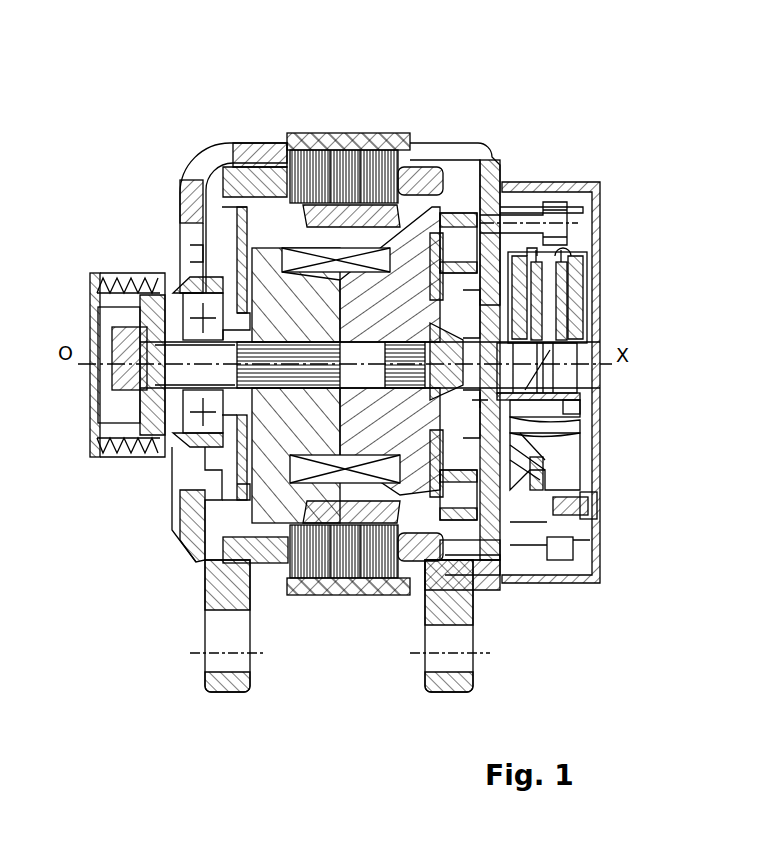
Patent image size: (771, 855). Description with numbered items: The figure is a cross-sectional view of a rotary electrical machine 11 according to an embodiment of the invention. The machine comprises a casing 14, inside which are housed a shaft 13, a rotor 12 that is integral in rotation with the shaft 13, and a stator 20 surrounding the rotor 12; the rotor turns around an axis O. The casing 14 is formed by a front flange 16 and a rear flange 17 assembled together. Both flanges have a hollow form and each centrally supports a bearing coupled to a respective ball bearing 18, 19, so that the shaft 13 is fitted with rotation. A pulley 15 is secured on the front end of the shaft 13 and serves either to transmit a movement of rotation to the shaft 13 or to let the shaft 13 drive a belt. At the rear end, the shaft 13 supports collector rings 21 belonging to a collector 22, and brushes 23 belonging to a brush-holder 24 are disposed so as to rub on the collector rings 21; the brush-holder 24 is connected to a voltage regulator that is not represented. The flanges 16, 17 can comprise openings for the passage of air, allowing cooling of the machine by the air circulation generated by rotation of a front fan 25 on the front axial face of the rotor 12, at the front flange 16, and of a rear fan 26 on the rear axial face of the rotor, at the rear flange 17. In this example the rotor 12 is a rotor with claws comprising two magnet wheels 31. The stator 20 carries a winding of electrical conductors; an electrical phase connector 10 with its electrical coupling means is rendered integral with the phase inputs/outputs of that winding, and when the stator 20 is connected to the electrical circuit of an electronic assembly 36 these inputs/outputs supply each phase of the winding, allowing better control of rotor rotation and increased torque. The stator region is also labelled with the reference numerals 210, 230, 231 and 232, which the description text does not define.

The electrical phase connector 10 is at (508, 555).
The rotary electrical machine 11 is at (150, 97).
The rotor 12 is at (193, 205).
The shaft 13 is at (178, 386).
The casing 14 is at (196, 158).
The pulley 15 is at (100, 325).
The front flange 16 is at (188, 250).
The rear flange 17 is at (566, 438).
The ball bearing 18 is at (100, 433).
The ball bearing 19 is at (556, 423).
The stator 20 is at (478, 172).
The collector rings 21 is at (588, 387).
The collector 22 is at (583, 400).
The brushes 23 is at (586, 316).
The brush-holder 24 is at (592, 282).
The front fan 25 is at (178, 508).
The rear fan 26 is at (595, 509).
The magnet wheels 31 is at (502, 600).
The electronic assembly 36 is at (590, 541).
The stator winding 210 is at (318, 158).
The stator core 230 is at (280, 165).
The stator teeth 231 is at (228, 148).
The stator insulator 232 is at (430, 168).